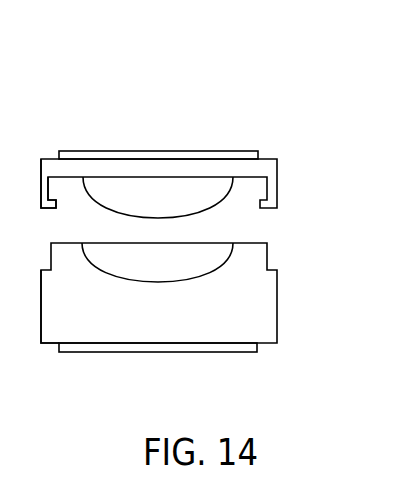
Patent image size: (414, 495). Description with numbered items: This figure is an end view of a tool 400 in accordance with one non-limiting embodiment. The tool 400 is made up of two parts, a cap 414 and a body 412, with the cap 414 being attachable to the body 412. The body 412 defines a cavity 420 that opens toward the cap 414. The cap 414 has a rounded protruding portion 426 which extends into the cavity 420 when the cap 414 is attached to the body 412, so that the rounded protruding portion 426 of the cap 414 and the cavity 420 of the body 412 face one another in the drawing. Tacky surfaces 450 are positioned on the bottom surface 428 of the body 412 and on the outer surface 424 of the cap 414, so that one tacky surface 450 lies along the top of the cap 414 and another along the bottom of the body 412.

The tool 400 is at (293, 105).
The body 412 is at (302, 352).
The cap 414 is at (312, 180).
The cavity 420 is at (200, 253).
The outer surface 424 is at (50, 158).
The rounded protruding portion 426 is at (92, 210).
The bottom surface 428 is at (52, 345).
The tacky surfaces 450 is at (158, 150).